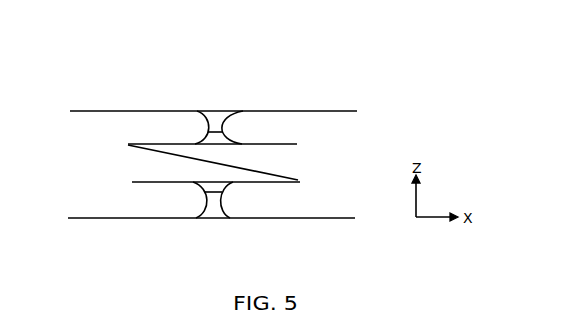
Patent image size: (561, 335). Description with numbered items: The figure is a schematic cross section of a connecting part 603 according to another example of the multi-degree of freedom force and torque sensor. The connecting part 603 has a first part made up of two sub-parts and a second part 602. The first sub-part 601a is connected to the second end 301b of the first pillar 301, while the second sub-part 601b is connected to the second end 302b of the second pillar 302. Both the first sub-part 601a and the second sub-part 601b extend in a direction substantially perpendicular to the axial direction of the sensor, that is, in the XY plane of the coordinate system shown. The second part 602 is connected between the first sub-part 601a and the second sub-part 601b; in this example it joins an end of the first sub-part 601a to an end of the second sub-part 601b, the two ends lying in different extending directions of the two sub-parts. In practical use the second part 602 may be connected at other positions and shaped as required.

The first pillar 301 is at (223, 124).
The second end of the first pillar 301b is at (207, 131).
The second pillar 302 is at (200, 210).
The second end of the second pillar 302b is at (220, 192).
The first sub-part 601a is at (172, 143).
The second sub-part 601b is at (258, 182).
The second part 602 is at (266, 174).
The connecting part 603 is at (125, 162).